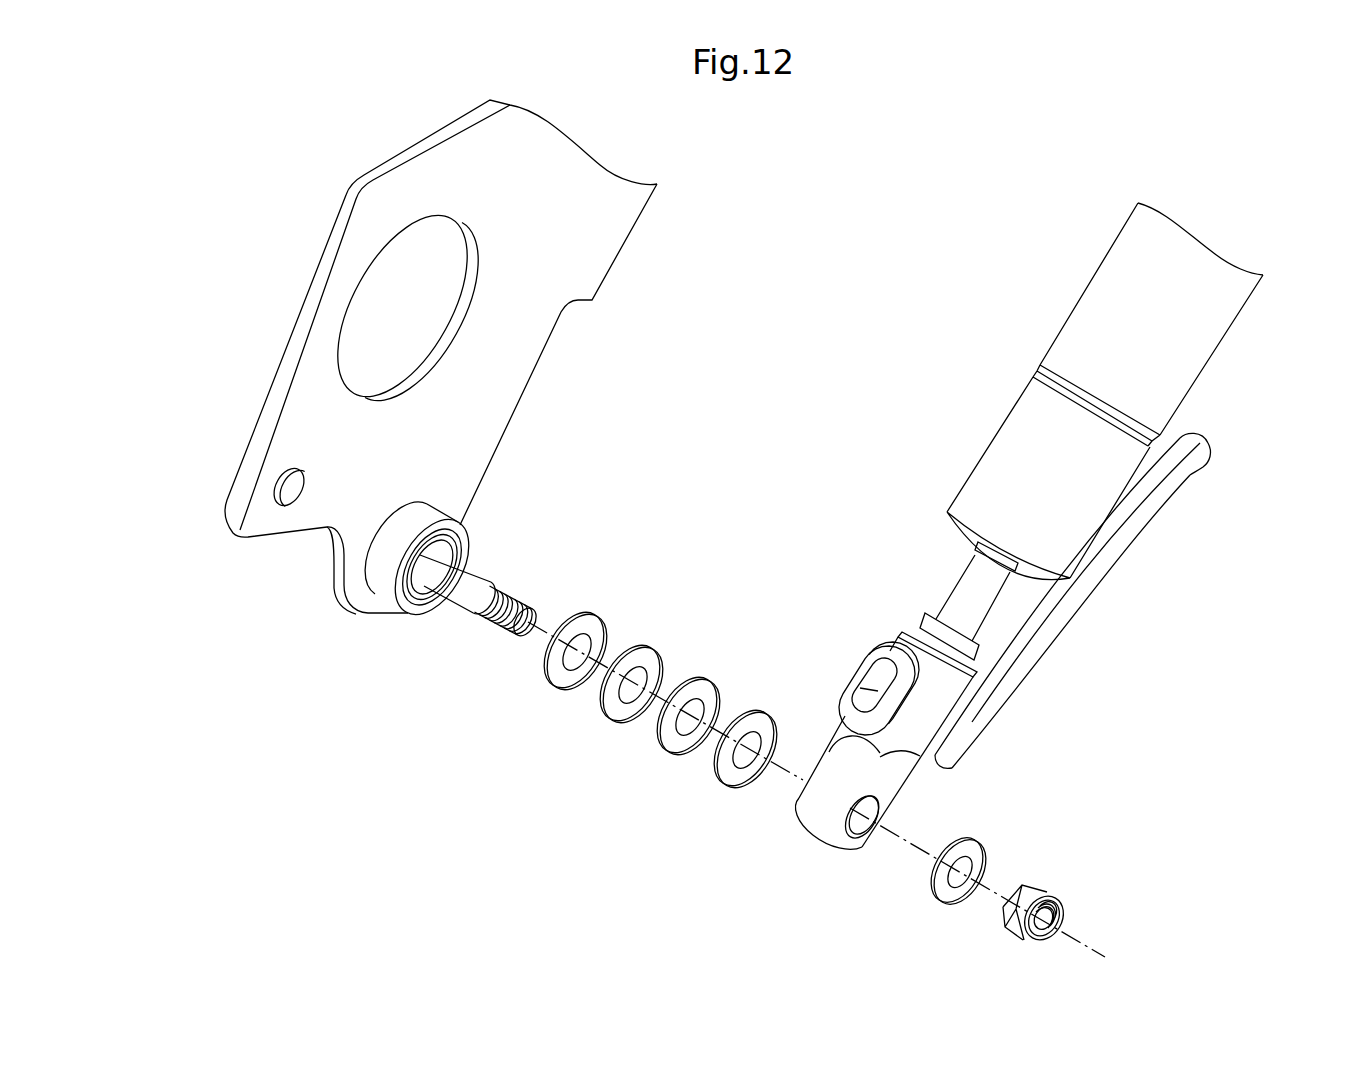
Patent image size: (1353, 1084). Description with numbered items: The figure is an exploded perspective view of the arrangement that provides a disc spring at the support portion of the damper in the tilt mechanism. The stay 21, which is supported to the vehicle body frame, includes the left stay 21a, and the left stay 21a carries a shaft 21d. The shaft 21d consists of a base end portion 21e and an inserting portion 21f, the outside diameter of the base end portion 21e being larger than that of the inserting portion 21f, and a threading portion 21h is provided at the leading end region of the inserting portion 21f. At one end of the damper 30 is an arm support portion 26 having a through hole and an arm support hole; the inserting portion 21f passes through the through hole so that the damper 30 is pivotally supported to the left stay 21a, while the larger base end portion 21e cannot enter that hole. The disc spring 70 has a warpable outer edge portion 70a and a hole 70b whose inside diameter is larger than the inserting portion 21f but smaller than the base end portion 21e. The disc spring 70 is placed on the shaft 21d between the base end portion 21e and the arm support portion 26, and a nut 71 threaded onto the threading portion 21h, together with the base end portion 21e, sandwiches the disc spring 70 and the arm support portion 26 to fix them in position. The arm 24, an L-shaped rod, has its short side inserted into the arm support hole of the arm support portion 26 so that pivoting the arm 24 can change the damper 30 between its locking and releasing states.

The stay 21 is at (397, 357).
The left stay 21a is at (300, 313).
The shaft 21d is at (396, 601).
The base end portion 21e is at (382, 560).
The inserting portion 21f is at (465, 577).
The threading portion 21h is at (493, 627).
The disc spring 70 is at (660, 730).
The outer edge portion 70a is at (672, 743).
The hole 70b is at (712, 698).
The nut 71 is at (1043, 887).
The arm support portion 26 is at (825, 817).
The damper 30 is at (1107, 280).
The arm 24 is at (1102, 553).